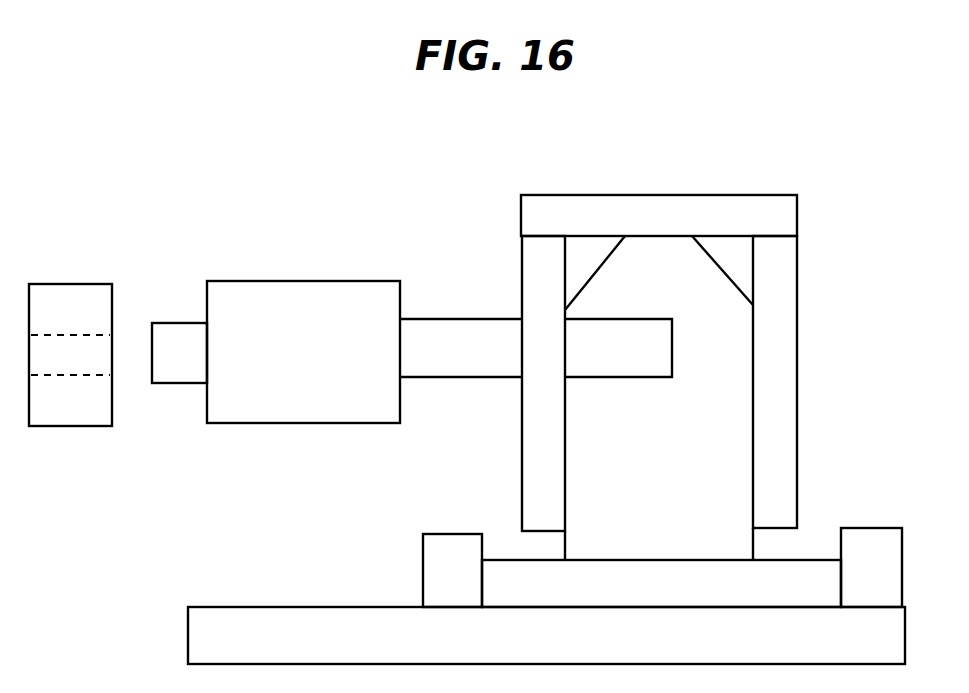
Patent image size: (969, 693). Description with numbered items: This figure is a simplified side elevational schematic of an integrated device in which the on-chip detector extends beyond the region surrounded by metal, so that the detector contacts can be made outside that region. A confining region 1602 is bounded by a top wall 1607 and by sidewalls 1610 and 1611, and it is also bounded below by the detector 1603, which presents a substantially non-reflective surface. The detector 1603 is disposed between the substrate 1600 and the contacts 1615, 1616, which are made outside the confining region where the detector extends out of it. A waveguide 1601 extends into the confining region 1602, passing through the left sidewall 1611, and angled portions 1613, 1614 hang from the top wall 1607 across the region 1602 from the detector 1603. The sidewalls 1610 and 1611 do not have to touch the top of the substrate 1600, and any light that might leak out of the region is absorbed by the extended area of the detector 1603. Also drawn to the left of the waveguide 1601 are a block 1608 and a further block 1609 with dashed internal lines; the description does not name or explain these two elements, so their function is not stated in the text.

The substrate 1600 is at (695, 645).
The waveguide 1601 is at (490, 362).
The confining region 1602 is at (680, 463).
The detector 1603 is at (643, 593).
The wall 1607 is at (680, 222).
The actuator block 1608 is at (315, 366).
The end block 1609 is at (89, 366).
The sidewall 1610 is at (778, 353).
The sidewall 1611 is at (544, 288).
The angled portion 1613 is at (587, 250).
The angled portion 1614 is at (725, 250).
The contact 1615 is at (473, 583).
The contact 1616 is at (895, 579).